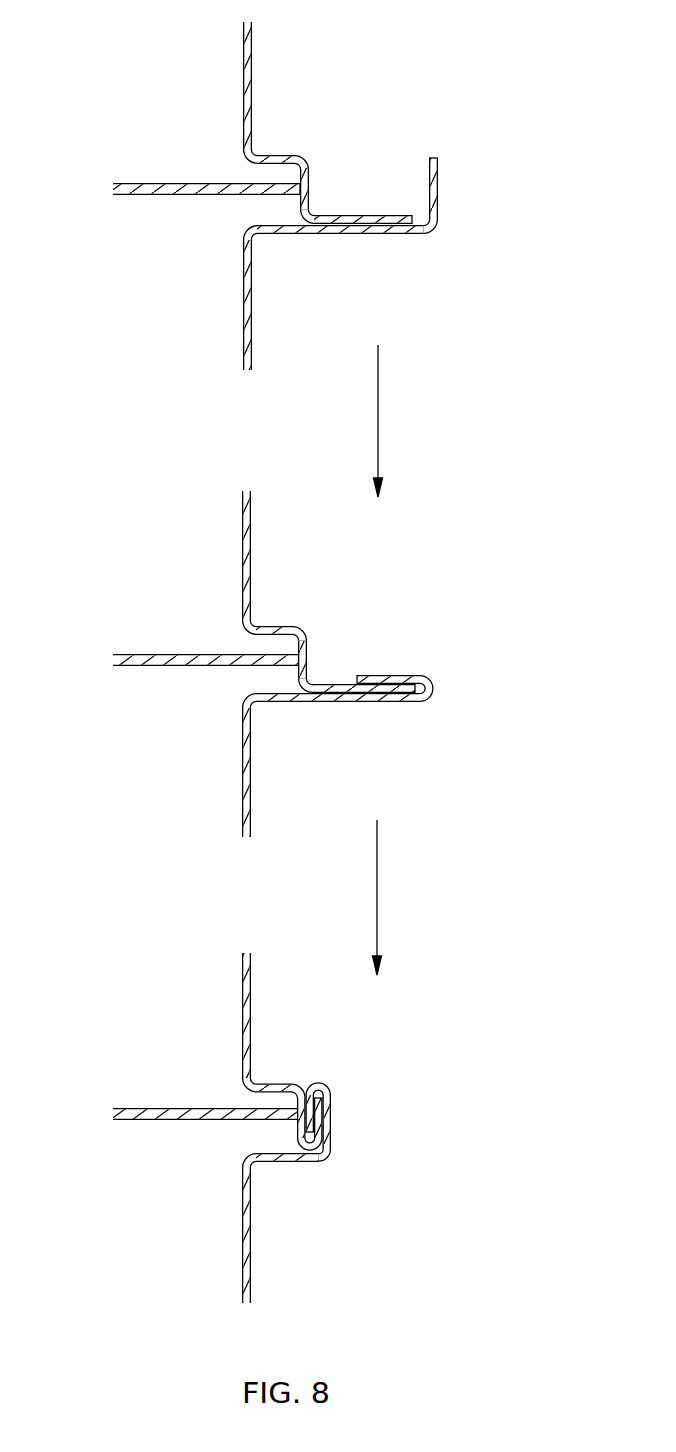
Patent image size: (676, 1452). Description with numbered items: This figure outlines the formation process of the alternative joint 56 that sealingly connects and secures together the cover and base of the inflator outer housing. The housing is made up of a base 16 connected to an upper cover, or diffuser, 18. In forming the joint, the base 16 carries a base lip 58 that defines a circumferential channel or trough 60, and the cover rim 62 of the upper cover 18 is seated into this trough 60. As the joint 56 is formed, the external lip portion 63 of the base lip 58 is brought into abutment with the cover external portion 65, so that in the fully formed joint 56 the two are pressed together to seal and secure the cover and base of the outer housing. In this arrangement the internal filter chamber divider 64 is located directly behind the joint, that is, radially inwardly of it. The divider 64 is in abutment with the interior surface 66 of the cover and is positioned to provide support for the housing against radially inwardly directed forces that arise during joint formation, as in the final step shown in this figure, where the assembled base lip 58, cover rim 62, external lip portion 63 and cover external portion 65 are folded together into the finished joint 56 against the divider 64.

The upper cover 18 is at (244, 50).
The base 16 is at (250, 335).
The internal filter chamber divider 64 is at (170, 196).
The interior surface 66 is at (297, 177).
The cover rim 62 is at (367, 214).
The base lip 58 is at (438, 188).
The cover external portion 65 is at (308, 655).
The external lip portion 63 is at (383, 680).
The circumferential channel or trough 60 is at (412, 701).
The alternative joint 56 is at (324, 1128).